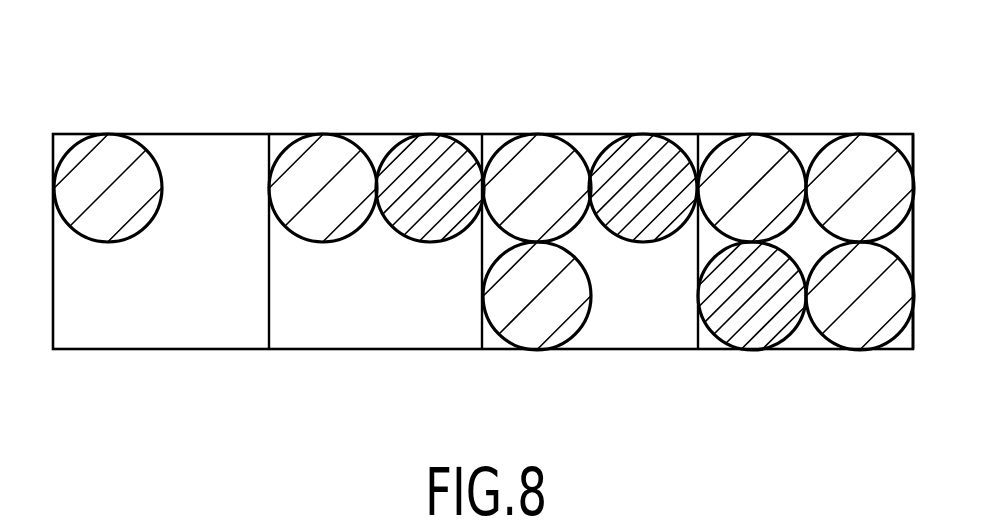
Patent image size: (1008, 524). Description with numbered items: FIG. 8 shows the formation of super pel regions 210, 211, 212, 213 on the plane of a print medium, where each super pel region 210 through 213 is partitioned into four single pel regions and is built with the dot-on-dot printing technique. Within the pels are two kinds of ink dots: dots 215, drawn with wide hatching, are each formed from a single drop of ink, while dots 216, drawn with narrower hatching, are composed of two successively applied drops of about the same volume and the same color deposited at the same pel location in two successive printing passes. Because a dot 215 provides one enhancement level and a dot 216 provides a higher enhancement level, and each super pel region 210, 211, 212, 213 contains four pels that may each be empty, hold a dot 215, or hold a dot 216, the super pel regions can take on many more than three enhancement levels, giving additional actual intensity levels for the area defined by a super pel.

The super pel region 210 is at (194, 102).
The super pel region 211 is at (372, 102).
The super pel region 212 is at (582, 102).
The super pel region 213 is at (802, 102).
The dot 215 is at (113, 150).
The dot 216 is at (425, 142).